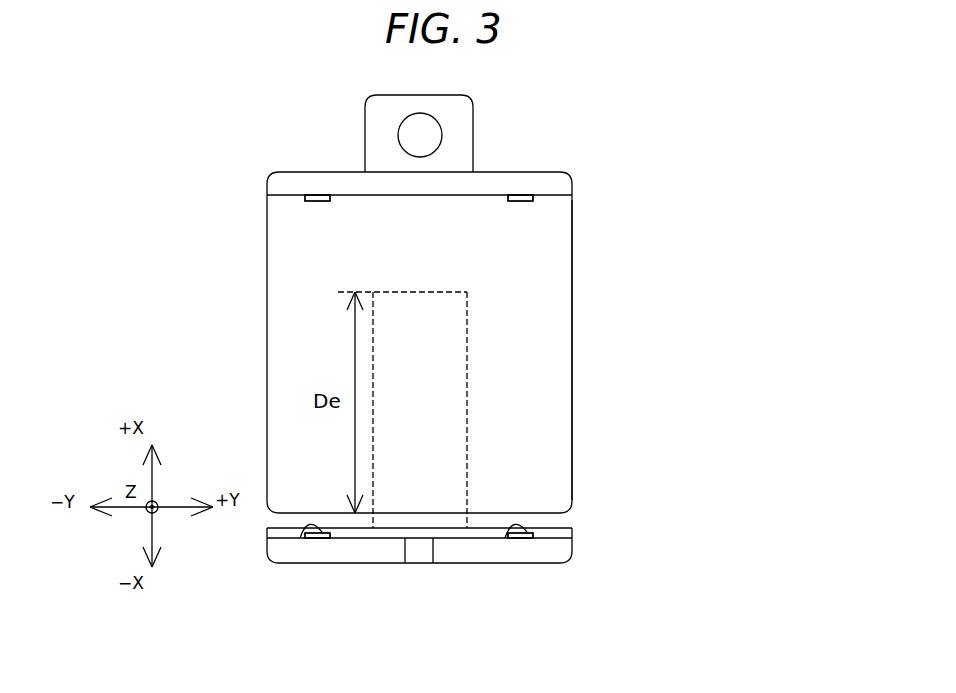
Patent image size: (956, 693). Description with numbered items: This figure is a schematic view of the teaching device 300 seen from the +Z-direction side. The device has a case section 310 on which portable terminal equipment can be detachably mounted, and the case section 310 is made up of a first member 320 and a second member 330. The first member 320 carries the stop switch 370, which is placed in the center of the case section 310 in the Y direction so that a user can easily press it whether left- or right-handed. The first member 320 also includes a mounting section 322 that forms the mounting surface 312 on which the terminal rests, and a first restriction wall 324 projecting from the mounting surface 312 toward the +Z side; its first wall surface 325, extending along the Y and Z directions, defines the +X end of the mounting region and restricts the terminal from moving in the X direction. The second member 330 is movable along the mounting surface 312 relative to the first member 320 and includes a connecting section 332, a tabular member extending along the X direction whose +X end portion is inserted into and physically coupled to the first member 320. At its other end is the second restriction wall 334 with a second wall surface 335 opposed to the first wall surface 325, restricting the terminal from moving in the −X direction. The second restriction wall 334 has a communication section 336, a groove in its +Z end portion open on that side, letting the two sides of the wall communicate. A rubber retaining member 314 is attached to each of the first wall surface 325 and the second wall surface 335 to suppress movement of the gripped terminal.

The teaching device 300 is at (180, 143).
The case section 310 is at (765, 193).
The mounting surface 312 is at (535, 322).
The retaining member 314 is at (522, 198).
The first member 320 is at (690, 118).
The mounting section 322 is at (572, 287).
The first restriction wall 324 is at (543, 182).
The first wall surface 325 is at (550, 197).
The second member 330 is at (686, 442).
The connecting section 332 is at (472, 520).
The second restriction wall 334 is at (565, 558).
The second wall surface 335 is at (537, 530).
The communication section 336 is at (416, 569).
The stop switch 370 is at (435, 132).